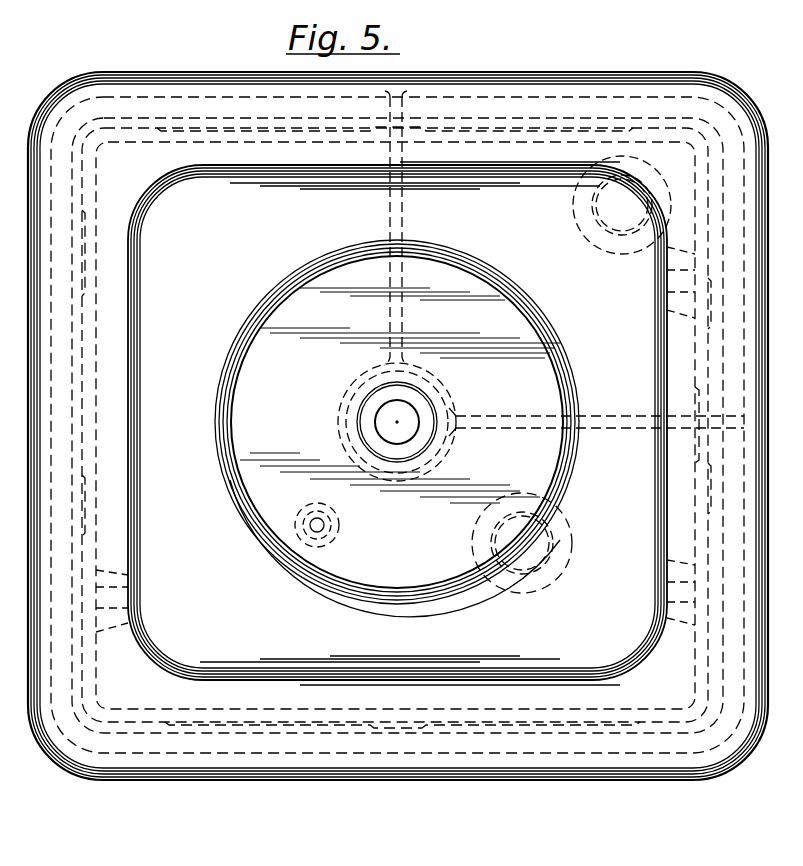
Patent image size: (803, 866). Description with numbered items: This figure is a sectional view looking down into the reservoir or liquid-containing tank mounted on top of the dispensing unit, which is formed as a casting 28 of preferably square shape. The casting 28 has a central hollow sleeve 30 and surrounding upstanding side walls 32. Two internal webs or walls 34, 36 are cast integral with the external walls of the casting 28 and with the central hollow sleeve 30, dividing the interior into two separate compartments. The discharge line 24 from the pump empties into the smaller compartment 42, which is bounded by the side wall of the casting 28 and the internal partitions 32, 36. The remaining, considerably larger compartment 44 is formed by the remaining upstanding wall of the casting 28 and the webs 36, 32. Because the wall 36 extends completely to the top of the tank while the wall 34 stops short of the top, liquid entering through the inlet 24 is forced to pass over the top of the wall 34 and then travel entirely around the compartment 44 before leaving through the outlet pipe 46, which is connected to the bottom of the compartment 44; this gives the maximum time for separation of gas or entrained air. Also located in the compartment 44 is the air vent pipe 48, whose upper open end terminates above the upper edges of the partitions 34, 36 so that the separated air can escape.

The casting 28 is at (652, 78).
The upstanding side walls 32 is at (342, 637).
The compartment 44 is at (187, 330).
The compartment 42 is at (397, 428).
The central hollow sleeve 30 is at (342, 441).
The internal web 34 is at (390, 208).
The internal web 36 is at (617, 416).
The discharge line 24 is at (614, 205).
The air vent pipe 48 is at (340, 525).
The outlet pipe 46 is at (553, 540).